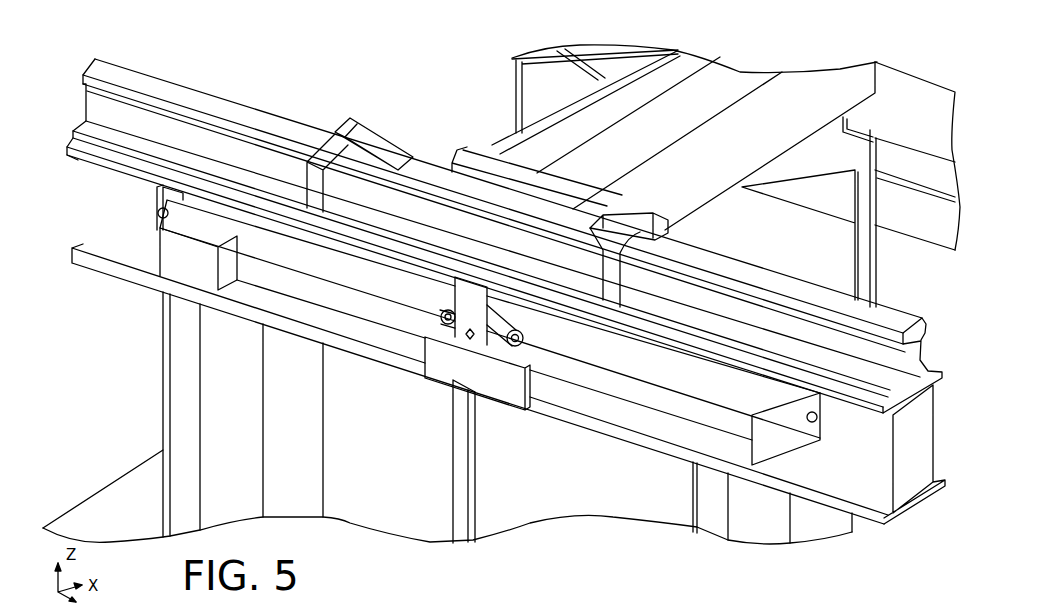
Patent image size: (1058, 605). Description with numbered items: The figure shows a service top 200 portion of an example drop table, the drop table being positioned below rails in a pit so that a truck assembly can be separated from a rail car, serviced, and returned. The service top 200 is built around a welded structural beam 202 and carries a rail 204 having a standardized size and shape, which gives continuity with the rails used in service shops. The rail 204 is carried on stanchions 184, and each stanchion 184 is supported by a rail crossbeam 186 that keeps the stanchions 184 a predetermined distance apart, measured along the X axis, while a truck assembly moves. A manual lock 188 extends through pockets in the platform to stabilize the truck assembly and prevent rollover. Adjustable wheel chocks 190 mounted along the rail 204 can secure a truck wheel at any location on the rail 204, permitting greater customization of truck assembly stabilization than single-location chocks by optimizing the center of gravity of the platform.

The service top 200 is at (162, 44).
The rail 204 is at (279, 113).
The welded structural beam 202 is at (86, 270).
The rail crossbeam 186 is at (745, 190).
The adjustable wheel chocks 190 is at (388, 130).
The manual lock 188 is at (427, 412).
The stanchion 184 is at (160, 400).